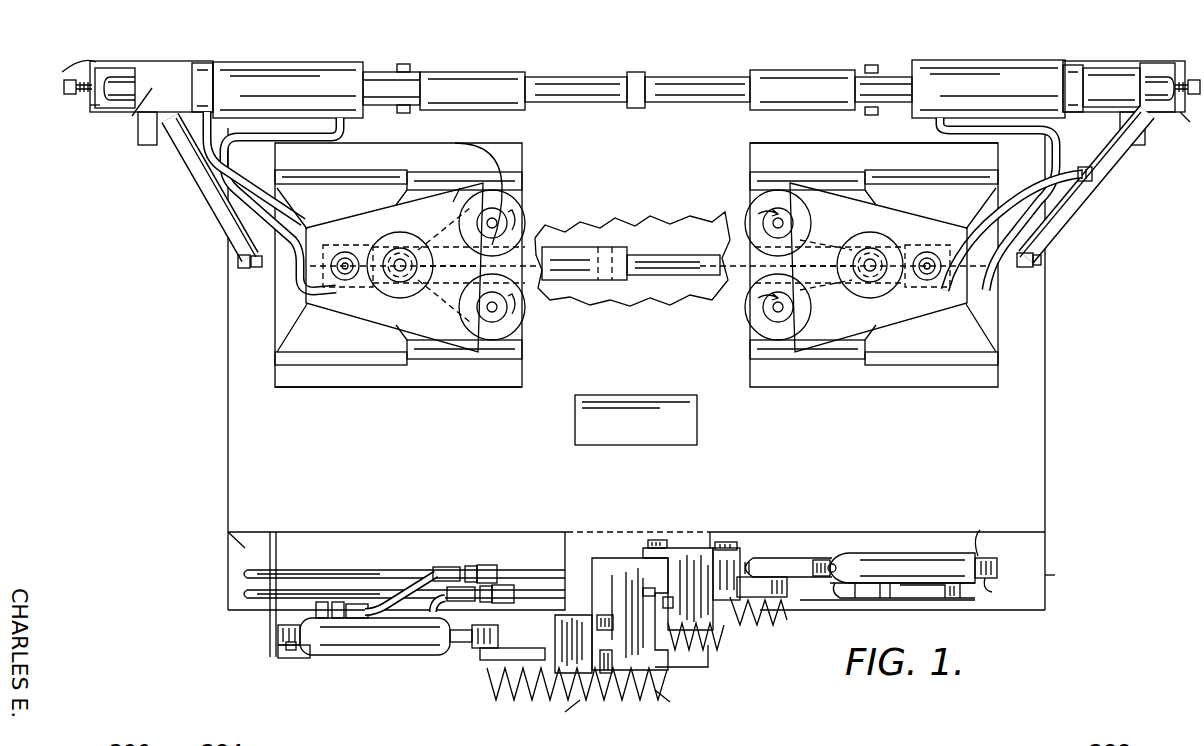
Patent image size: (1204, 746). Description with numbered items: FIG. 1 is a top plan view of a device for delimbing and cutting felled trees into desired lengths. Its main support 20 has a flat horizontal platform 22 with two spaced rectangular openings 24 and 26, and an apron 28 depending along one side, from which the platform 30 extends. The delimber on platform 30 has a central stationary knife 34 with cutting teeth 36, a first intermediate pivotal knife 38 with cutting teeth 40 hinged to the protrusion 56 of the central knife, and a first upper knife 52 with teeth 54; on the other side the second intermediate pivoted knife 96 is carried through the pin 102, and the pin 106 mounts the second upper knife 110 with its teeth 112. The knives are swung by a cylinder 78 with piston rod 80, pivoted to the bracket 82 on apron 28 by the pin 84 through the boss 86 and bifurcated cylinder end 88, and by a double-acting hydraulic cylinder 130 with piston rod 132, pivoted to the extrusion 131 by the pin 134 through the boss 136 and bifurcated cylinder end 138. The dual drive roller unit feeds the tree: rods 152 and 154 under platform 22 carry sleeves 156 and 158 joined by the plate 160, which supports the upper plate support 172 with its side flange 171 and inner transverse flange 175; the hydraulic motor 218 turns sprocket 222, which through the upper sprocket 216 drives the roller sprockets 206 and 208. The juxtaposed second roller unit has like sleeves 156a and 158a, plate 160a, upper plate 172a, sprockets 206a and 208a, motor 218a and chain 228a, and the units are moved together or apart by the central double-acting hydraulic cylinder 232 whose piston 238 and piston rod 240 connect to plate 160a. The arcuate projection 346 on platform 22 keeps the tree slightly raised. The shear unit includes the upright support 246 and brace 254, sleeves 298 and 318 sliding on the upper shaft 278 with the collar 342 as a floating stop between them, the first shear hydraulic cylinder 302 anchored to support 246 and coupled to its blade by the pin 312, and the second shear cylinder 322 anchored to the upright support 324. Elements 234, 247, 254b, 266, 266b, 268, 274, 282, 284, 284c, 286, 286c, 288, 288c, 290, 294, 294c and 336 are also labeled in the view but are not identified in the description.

The main support 20 is at (220, 442).
The flat horizontal platform 22 is at (228, 516).
The rectangular opening 24 is at (765, 146).
The rectangular opening 26 is at (408, 144).
The apron 28 is at (228, 538).
The platform 30 is at (575, 548).
The central arcuate stationary knife 34 is at (608, 566).
The cutting teeth 36 is at (671, 703).
The first intermediate arcuate pivotal knife 38 is at (584, 672).
The cutting teeth 40 is at (567, 717).
The first upper arcuate knife 52 is at (474, 648).
The teeth 54 is at (512, 690).
The protrusion 56 is at (592, 640).
The cylinder 78 is at (340, 655).
The piston rod 80 is at (450, 650).
The bracket 82 is at (268, 655).
The pin 84 is at (292, 652).
The boss 86 is at (278, 633).
The bifurcated cylinder end 88 is at (284, 658).
The second intermediate arcuate pivoted knife 96 is at (686, 546).
The pin 102 is at (658, 540).
The pin 106 is at (732, 542).
The second upper arcuate knife 110 is at (760, 563).
The teeth 112 is at (774, 612).
The double-acting hydraulic cylinder 130 is at (900, 560).
The extrusion 131 is at (1071, 576).
The piston rod 132 is at (828, 562).
The pin 134 is at (1008, 590).
The boss 136 is at (998, 568).
The bifurcated cylinder end 138 is at (989, 529).
The rod 152 is at (410, 185).
The rod 154 is at (445, 355).
The sleeve 156 is at (356, 168).
The sleeve 156a is at (900, 362).
The sleeve 158 is at (330, 362).
The sleeve 158a is at (880, 172).
The plate 160 is at (282, 323).
The plate 160a is at (998, 168).
The depending side flange 171 is at (451, 201).
The upper plate support 172 is at (412, 320).
The upper plate support 172a is at (950, 298).
The inner transverse flange 175 is at (500, 143).
The sprocket 206 is at (488, 342).
The sprocket 206a is at (776, 186).
The sprocket 208 is at (520, 208).
The sprocket 208a is at (768, 340).
The upper sprocket 216 is at (870, 308).
The hydraulic motor 218 is at (320, 294).
The hydraulic motor 218a is at (985, 287).
The sprocket 222 is at (340, 282).
The chain 228a is at (820, 215).
The central double-acting hydraulic cylinder 232 is at (582, 252).
The drive gear 234 is at (398, 232).
The piston 238 is at (632, 259).
The piston rod 240 is at (652, 272).
The upright support 246 is at (1090, 178).
The drive gear 247 is at (886, 253).
The brace 254 is at (1138, 148).
The hanger block 254b is at (148, 148).
The hydraulic line 266 is at (1066, 212).
The hydraulic line 266b is at (205, 200).
The hose fitting 268 is at (1040, 262).
The end cap 274 is at (1118, 54).
The upper shaft 278 is at (560, 98).
The housing 282 is at (1189, 126).
The adjusting cylinder 284 is at (1153, 66).
The adjusting cylinder 284c is at (84, 126).
The cylinder end 286 is at (1125, 70).
The cylinder end 286c is at (202, 78).
The piston 288 is at (112, 118).
The piston 288c is at (120, 80).
The adjusting screw 290 is at (1156, 150).
The adjusting nut 294 is at (1140, 80).
The adjusting nut 294c is at (64, 92).
The sleeve 298 is at (800, 76).
The first shear hydraulic cylinder 302 is at (975, 62).
The pin 312 is at (868, 116).
The sleeve 318 is at (460, 74).
The second shear cylinder 322 is at (290, 64).
The upright support 324 is at (114, 123).
The bracket 336 is at (404, 64).
The collar 342 is at (640, 72).
The arcuate projection 346 is at (698, 418).